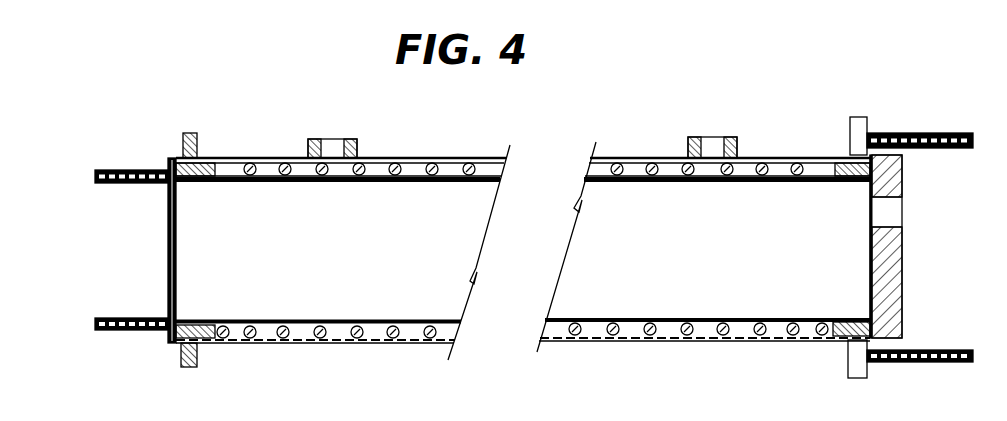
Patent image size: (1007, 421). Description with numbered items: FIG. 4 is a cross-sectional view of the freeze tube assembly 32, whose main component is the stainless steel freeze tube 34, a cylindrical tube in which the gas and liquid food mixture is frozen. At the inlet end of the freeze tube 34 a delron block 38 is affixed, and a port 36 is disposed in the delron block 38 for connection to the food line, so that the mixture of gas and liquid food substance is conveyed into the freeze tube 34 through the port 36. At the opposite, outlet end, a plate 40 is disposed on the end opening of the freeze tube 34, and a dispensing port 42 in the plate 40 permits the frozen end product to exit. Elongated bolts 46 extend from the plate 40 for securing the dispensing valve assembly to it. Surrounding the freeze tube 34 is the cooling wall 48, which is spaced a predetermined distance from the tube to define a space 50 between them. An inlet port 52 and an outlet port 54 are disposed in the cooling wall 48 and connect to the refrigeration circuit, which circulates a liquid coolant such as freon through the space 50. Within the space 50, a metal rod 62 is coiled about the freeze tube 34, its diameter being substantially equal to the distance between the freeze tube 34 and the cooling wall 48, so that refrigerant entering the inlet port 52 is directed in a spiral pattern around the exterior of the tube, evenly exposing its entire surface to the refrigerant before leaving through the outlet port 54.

The freeze tube assembly 32 is at (643, 148).
The freeze tube 34 is at (268, 182).
The port 36 is at (902, 197).
The delron block 38 is at (902, 262).
The plate 40 is at (168, 197).
The dispensing port 42 is at (168, 225).
The elongated bolts 46 is at (127, 170).
The cooling wall 48 is at (395, 158).
The space 50 is at (272, 158).
The inlet port 52 is at (737, 140).
The outlet port 54 is at (355, 140).
The metal rod 62 is at (463, 158).